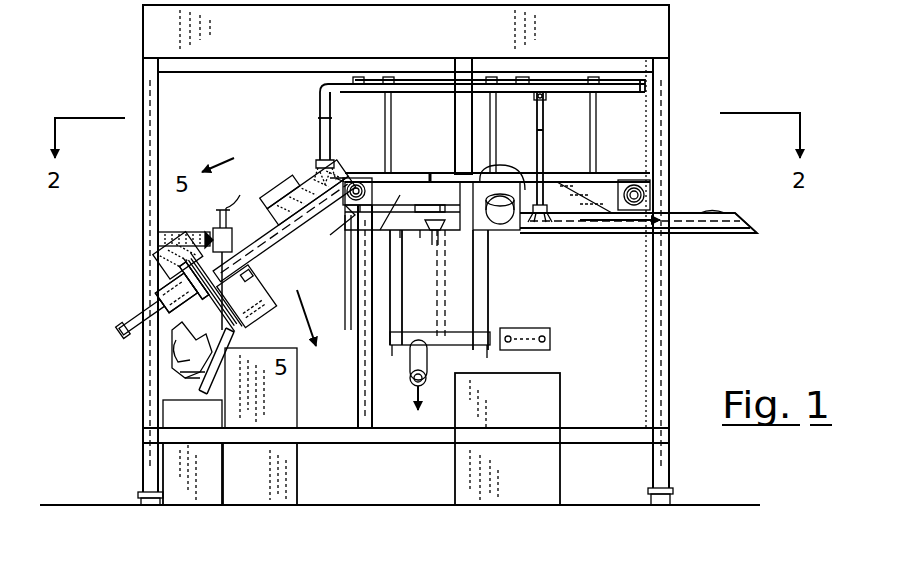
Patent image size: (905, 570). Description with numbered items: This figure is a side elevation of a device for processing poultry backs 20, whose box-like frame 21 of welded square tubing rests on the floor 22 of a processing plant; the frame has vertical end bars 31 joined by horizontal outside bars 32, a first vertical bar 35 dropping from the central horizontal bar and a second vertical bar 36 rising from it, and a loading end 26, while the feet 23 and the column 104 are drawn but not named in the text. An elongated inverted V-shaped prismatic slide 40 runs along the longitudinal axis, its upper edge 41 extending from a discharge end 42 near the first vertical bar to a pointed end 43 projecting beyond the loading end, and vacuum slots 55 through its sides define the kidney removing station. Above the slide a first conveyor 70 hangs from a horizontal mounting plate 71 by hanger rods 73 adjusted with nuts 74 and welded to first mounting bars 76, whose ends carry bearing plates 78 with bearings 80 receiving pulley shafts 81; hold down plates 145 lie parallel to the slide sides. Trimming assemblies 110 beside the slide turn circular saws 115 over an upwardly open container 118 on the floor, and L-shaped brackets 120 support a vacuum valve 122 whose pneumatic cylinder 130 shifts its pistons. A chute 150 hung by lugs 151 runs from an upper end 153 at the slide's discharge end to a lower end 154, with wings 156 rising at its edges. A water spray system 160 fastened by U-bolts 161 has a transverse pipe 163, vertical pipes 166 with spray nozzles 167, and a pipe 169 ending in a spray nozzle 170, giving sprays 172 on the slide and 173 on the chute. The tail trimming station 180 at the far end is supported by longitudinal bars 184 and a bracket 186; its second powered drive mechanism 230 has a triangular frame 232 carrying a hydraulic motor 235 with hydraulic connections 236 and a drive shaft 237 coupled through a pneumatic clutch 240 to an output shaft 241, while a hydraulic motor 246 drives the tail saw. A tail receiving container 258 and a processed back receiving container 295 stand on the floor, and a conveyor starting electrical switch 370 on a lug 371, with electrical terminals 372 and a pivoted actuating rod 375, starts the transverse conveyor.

The device for processing poultry backs 20 is at (106, 57).
The frame 21 is at (673, 93).
The floor 22 is at (75, 505).
The foot pads 23 is at (143, 478).
The loading end 26 is at (672, 130).
The vertical end bars 31 is at (145, 148).
The horizontal outside bars 32 is at (207, 73).
The first vertical bar 35 is at (362, 412).
The second vertical bar 36 is at (455, 104).
The prismatic slide 40 is at (696, 240).
The upper edge 41 is at (712, 213).
The discharge longitudinal end 42 is at (352, 306).
The pointed end 43 is at (756, 232).
The vacuum slots 55 is at (428, 226).
The first conveyor 70 is at (636, 163).
The horizontal mounting plate 71 is at (568, 82).
The hanger rods 73 is at (493, 155).
The nuts 74 is at (600, 93).
The first mounting bars 76 is at (437, 173).
The bearing plate 78 is at (642, 214).
The bearings 80 is at (372, 163).
The pulley shaft 81 is at (370, 188).
The support column 104 is at (592, 222).
The trimming assemblies 110 is at (500, 236).
The circular saw 115 is at (520, 224).
The upwardly open container 118 is at (546, 499).
The L-shaped brackets 120 is at (490, 305).
The vacuum valve 122 is at (428, 345).
The pneumatic cylinder 130 is at (550, 334).
The hold down plates 145 is at (440, 194).
The chute 150 is at (270, 214).
The lugs 151 is at (345, 240).
The upper end 153 is at (340, 176).
The lower end 154 is at (244, 271).
The wings 156 is at (322, 207).
The water spray system 160 is at (552, 96).
The U-bolts 161 is at (332, 97).
The transverse pipe 163 is at (364, 93).
The vertical pipes 166 is at (535, 142).
The spray nozzle 167 is at (575, 165).
The pipe 169 is at (318, 126).
The spray nozzle 170 is at (322, 147).
The spray discharge 172 is at (548, 216).
The spray discharge 173 is at (348, 168).
The tail trimming station 180 is at (123, 313).
The longitudinal bars 184 is at (180, 233).
The bracket 186 is at (185, 252).
The second powered drive mechanism 230 is at (152, 347).
The triangular frame 232 is at (170, 268).
The hydraulic motor 235 is at (180, 335).
The hydraulic connections 236 is at (176, 365).
The drive shaft 237 is at (190, 372).
The pneumatic clutch 240 is at (232, 358).
The output shaft 241 is at (238, 345).
The hydraulic motor 246 is at (170, 300).
The tail receiving container 258 is at (206, 490).
The processed back receiving container 295 is at (266, 499).
The conveyor starting electrical switch 370 is at (225, 238).
The lug 371 is at (190, 216).
The electrical terminals 372 is at (218, 222).
The actuating rod 375 is at (192, 282).